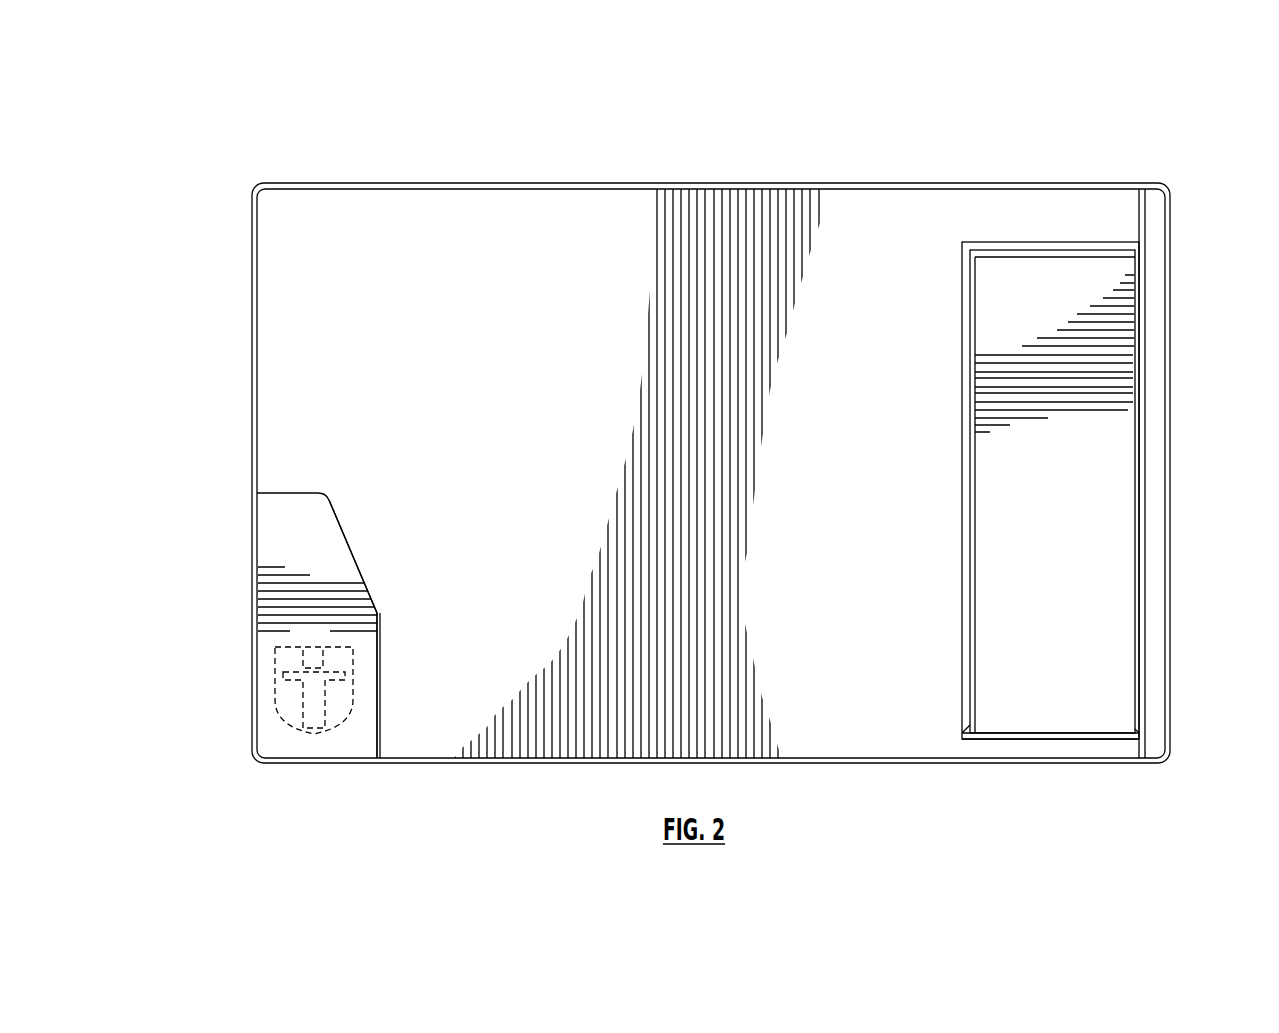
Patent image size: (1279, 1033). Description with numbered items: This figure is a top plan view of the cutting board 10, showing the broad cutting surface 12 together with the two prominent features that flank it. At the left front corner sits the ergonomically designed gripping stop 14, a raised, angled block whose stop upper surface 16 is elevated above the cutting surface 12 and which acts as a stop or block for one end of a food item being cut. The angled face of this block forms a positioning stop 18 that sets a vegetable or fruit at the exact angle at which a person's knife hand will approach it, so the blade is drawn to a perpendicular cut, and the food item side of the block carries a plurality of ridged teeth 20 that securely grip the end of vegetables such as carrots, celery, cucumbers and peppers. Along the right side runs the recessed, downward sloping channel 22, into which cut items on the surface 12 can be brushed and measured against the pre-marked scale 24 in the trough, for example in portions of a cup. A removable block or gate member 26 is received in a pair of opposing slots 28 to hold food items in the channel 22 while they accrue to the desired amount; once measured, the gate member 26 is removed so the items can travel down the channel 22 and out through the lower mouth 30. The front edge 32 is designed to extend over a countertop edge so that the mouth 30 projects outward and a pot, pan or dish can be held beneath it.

The cutting board 10 is at (946, 92).
The cutting surface 12 is at (500, 310).
The gripping stop 14 is at (243, 552).
The stop upper surface 16 is at (320, 548).
The positioning stop 18 is at (367, 545).
The ridged teeth 20 is at (380, 665).
The channel 22 is at (1055, 416).
The pre-marked scale 24 is at (1020, 540).
The gate member 26 is at (1065, 740).
The slots 28 is at (965, 715).
The lower mouth 30 is at (1010, 783).
The front edge 32 is at (430, 765).